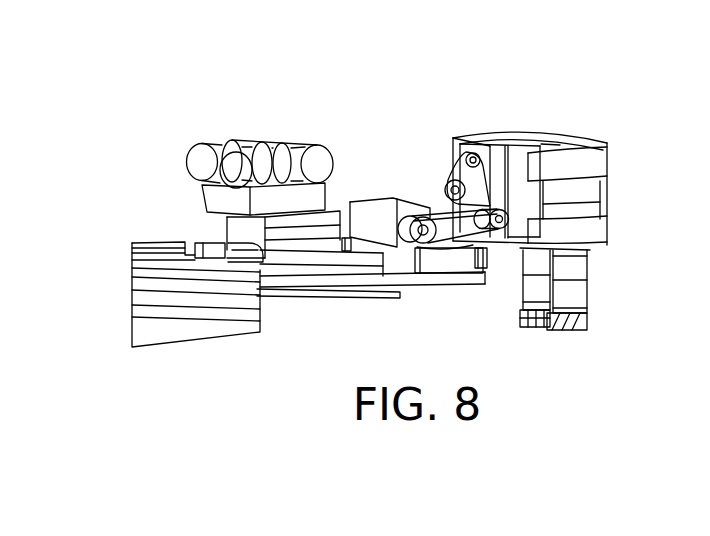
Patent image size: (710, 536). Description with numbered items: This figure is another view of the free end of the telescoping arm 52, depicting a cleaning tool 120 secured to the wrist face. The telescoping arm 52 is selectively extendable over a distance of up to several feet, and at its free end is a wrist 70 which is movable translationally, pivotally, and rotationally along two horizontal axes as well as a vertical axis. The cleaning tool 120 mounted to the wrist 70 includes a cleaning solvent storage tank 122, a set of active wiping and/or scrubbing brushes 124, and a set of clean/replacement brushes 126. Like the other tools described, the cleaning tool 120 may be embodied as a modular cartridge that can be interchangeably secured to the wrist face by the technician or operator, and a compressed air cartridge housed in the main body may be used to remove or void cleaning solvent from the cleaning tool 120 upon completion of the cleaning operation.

The telescoping arm 52 is at (217, 362).
The wrist 70 is at (530, 115).
The cleaning tool 120 is at (614, 190).
The cleaning solvent storage tank 122 is at (583, 268).
The active wiping and/or scrubbing brushes 124 is at (580, 325).
The clean/replacement brushes 126 is at (240, 128).